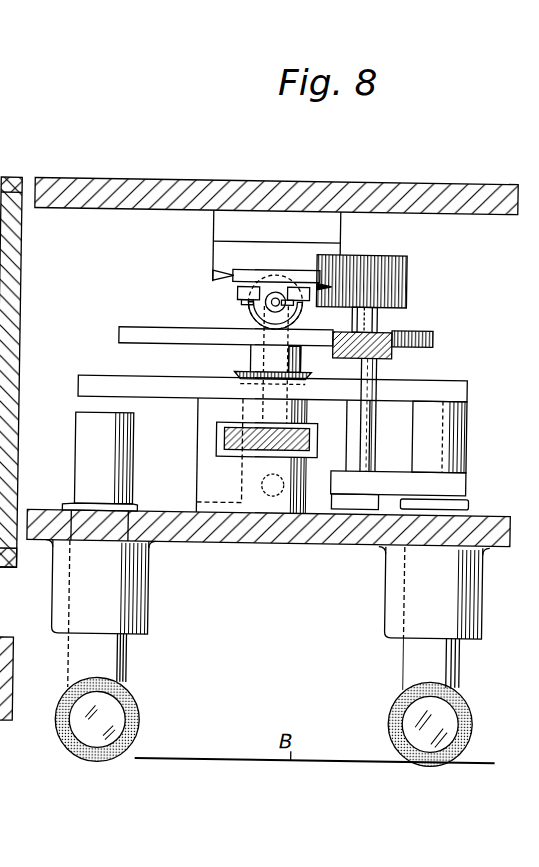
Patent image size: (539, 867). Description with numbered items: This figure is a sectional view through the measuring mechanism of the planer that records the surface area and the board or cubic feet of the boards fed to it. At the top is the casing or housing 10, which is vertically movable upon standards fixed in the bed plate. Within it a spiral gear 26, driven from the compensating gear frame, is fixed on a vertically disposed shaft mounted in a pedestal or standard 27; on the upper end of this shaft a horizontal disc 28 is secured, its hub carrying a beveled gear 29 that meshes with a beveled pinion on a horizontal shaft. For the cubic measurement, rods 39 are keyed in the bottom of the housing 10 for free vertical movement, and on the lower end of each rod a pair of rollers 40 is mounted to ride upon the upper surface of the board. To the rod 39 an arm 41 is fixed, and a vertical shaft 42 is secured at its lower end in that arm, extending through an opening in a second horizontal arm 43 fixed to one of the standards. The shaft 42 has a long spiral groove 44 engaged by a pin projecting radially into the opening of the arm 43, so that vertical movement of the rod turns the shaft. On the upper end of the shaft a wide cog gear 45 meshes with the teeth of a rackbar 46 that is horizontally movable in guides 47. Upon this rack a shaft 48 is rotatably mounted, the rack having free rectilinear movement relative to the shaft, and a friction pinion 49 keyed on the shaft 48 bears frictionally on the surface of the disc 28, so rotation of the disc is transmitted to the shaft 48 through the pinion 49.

The casing or housing 10 is at (88, 219).
The spiral gear 26 is at (225, 445).
The pedestal or standard 27 is at (245, 358).
The horizontal disc 28 is at (181, 329).
The beveled gear 29 is at (240, 375).
The rod 39 is at (125, 663).
The rollers 40 is at (144, 709).
The arm 41 is at (381, 478).
The vertical shaft 42 is at (374, 390).
The second horizontal arm 43 is at (390, 334).
The spiral groove 44 is at (348, 456).
The wide cog gear 45 is at (398, 298).
The rackbar 46 is at (242, 281).
The guides 47 is at (210, 272).
The shaft 48 is at (275, 298).
The friction pinion 49 is at (254, 317).